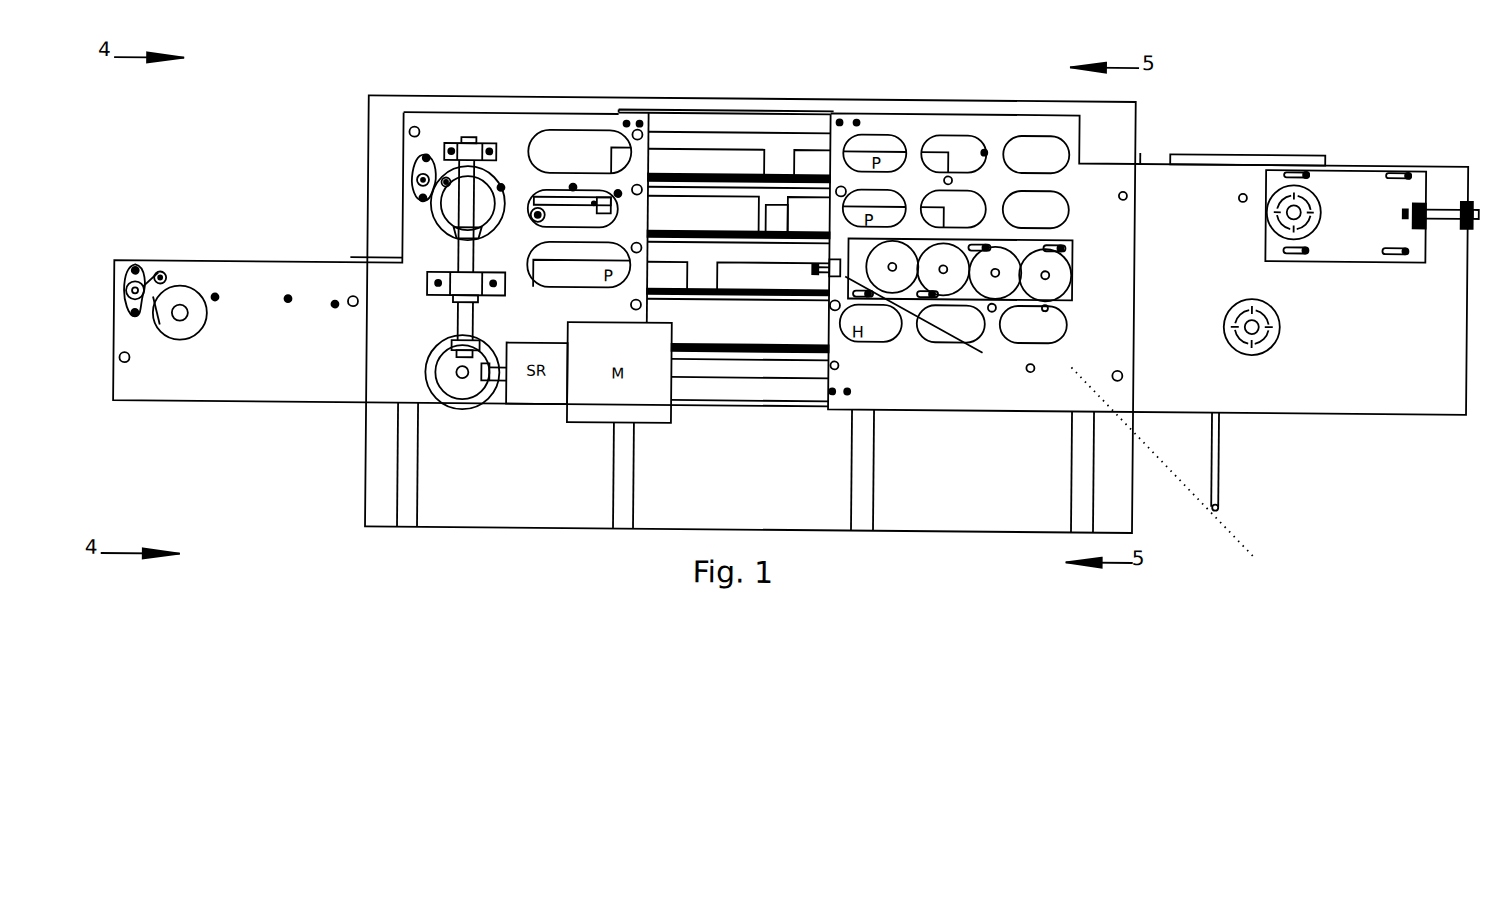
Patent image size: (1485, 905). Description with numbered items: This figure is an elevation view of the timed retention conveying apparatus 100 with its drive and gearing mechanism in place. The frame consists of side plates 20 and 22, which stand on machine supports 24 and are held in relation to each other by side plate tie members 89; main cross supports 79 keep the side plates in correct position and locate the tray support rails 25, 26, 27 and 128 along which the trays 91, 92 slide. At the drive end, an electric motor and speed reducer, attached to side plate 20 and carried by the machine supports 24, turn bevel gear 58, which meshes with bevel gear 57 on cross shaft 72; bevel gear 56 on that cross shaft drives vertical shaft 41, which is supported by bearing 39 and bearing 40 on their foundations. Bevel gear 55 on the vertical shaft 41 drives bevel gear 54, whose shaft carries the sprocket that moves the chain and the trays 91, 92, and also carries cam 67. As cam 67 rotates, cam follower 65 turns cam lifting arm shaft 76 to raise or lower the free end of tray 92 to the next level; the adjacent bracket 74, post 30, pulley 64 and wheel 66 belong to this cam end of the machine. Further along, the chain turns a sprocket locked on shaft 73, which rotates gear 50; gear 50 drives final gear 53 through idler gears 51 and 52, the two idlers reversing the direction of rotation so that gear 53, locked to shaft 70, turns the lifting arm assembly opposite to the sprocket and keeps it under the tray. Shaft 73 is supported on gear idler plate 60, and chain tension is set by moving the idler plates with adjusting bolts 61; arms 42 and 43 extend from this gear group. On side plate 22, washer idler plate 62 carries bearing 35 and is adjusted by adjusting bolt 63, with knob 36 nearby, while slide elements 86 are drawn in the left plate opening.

The machine frame 100 is at (366, 154).
The side plate 20 is at (791, 260).
The side plate 22 is at (1232, 214).
The machine supports 24 is at (399, 472).
The tray support rail 25 is at (680, 245).
The tray support rail 26 is at (720, 301).
The tray support rail 27 is at (717, 359).
The post 30 is at (135, 322).
The bearing 35 is at (1303, 212).
The control knob 36 is at (1262, 327).
The bearing 39 is at (468, 150).
The bearing 40 is at (466, 290).
The vertical shaft 41 is at (462, 318).
The roller arm 42 is at (1048, 276).
The roller arm 43 is at (998, 274).
The gear 50 is at (892, 267).
The idler gear 51 is at (943, 269).
The idler gear 52 is at (995, 273).
The gear 53 is at (1045, 275).
The bevel gear 54 is at (440, 215).
The bevel gear 55 is at (460, 237).
The bevel gear 56 is at (452, 343).
The bevel gear 57 is at (440, 386).
The bevel gear 58 is at (492, 386).
The gear idler plate 60 is at (959, 270).
The adjusting bolt 61 is at (896, 268).
The washer idler plate 62 is at (1345, 216).
The adjusting bolt 63 is at (1438, 210).
The idler pulley 64 is at (160, 330).
The cam follower 65 is at (416, 189).
The drive wheel 66 is at (180, 332).
The cam 67 is at (428, 196).
The shaft 70 is at (1070, 291).
The cross shaft 72 is at (464, 381).
The shaft 73 is at (947, 271).
The tension bracket 74 is at (138, 290).
The cam lifting arm shaft 76 is at (440, 172).
The main cross supports 79 is at (1119, 195).
The slide bar 86 is at (575, 207).
The side plate tie members 89 is at (738, 260).
The tray 91 is at (1221, 506).
The tray 92 is at (594, 214).
The tray support rail 128 is at (737, 188).